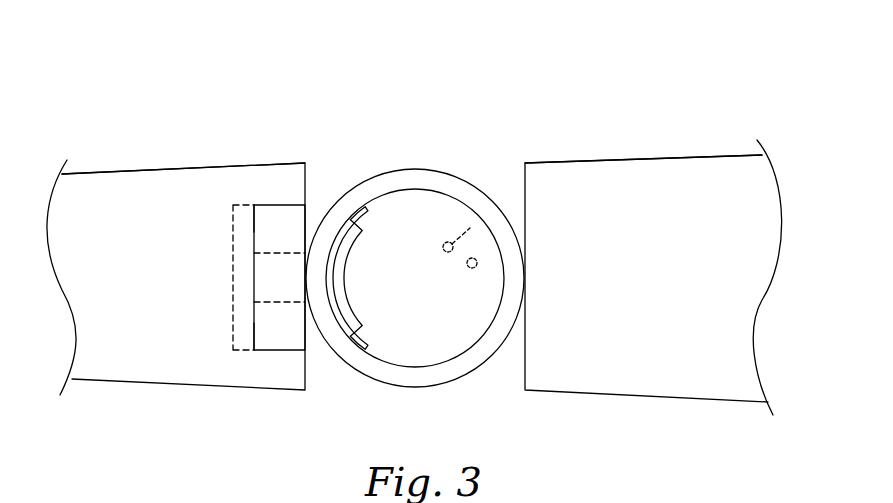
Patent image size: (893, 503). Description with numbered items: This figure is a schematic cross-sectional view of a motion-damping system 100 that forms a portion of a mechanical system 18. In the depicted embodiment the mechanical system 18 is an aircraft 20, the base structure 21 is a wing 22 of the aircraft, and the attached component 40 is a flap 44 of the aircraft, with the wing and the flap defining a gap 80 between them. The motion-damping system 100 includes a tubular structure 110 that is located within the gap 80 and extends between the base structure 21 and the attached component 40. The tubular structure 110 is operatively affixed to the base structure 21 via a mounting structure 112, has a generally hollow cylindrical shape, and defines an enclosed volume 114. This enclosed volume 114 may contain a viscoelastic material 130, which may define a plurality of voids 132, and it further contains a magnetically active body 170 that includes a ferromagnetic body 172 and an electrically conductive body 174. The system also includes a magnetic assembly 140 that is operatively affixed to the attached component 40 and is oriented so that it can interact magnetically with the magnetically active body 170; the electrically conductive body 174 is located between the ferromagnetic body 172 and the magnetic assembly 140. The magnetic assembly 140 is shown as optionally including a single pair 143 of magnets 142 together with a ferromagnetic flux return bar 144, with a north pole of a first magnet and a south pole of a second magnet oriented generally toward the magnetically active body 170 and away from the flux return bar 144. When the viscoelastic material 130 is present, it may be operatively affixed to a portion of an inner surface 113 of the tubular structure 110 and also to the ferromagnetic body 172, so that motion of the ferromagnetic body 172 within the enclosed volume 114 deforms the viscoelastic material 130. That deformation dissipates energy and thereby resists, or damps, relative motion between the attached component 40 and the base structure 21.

The mechanical system 18 is at (98, 58).
The aircraft 20 is at (90, 103).
The base structure 21 is at (660, 155).
The wing 22 is at (708, 157).
The attached component 40 is at (123, 167).
The flap 44 is at (183, 168).
The gap 80 is at (340, 427).
The motion-damping system 100 is at (350, 115).
The tubular structure 110 is at (340, 193).
The mounting structure 112 is at (528, 277).
The inner surface 113 is at (477, 342).
The enclosed volume 114 is at (412, 207).
The viscoelastic material 130 is at (438, 210).
The voids 132 is at (472, 258).
The magnetic assembly 140 is at (188, 265).
The magnets 142 is at (267, 226).
The pair of magnets 143 is at (215, 300).
The ferromagnetic flux return bar 144 is at (240, 248).
The magnetically active body 170 is at (383, 326).
The ferromagnetic body 172 is at (343, 267).
The electrically conductive body 174 is at (333, 296).